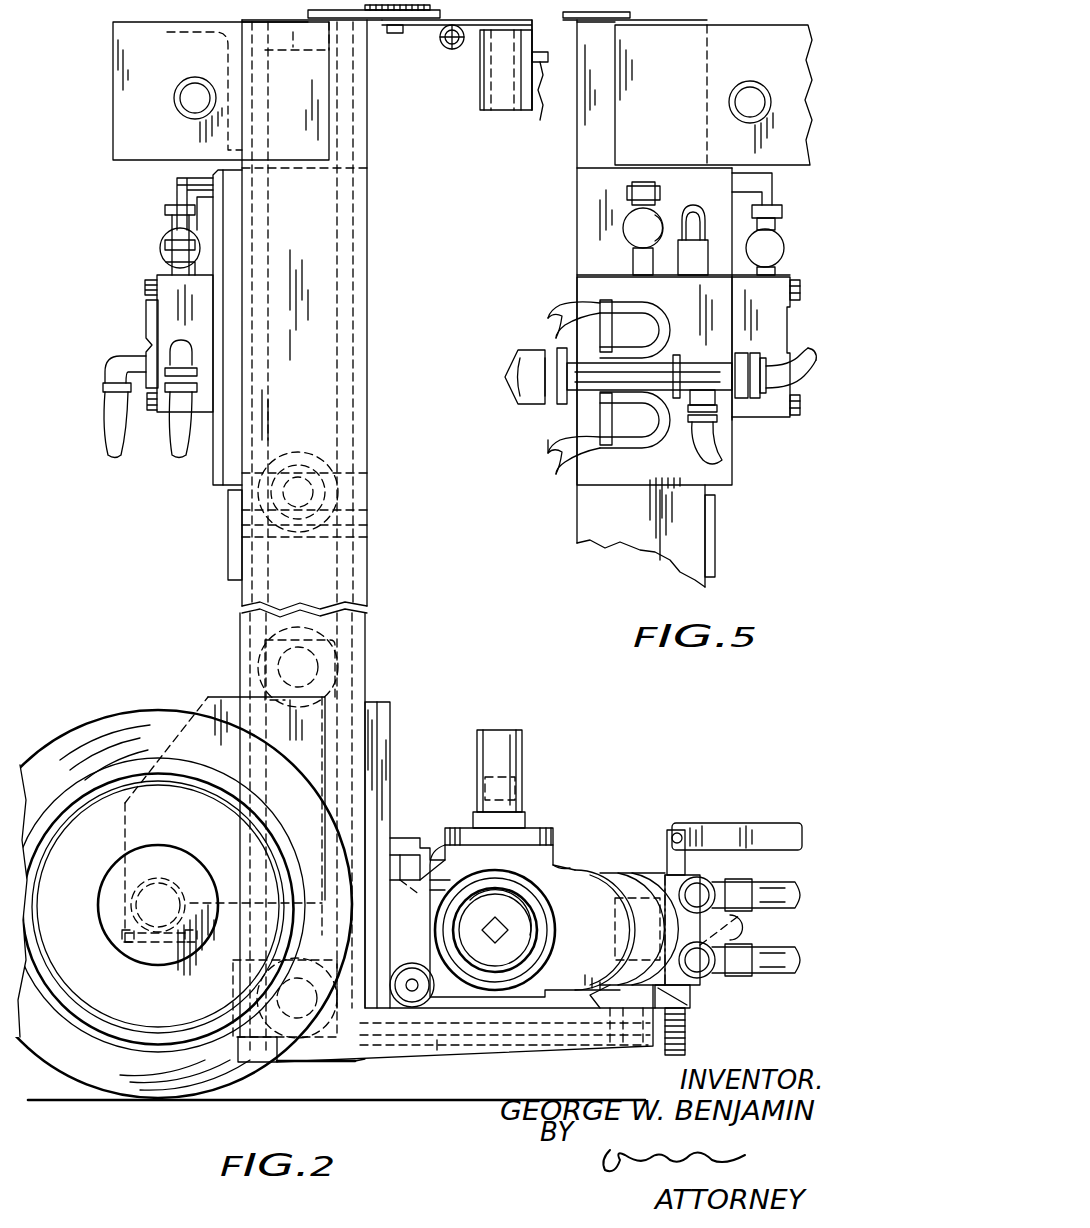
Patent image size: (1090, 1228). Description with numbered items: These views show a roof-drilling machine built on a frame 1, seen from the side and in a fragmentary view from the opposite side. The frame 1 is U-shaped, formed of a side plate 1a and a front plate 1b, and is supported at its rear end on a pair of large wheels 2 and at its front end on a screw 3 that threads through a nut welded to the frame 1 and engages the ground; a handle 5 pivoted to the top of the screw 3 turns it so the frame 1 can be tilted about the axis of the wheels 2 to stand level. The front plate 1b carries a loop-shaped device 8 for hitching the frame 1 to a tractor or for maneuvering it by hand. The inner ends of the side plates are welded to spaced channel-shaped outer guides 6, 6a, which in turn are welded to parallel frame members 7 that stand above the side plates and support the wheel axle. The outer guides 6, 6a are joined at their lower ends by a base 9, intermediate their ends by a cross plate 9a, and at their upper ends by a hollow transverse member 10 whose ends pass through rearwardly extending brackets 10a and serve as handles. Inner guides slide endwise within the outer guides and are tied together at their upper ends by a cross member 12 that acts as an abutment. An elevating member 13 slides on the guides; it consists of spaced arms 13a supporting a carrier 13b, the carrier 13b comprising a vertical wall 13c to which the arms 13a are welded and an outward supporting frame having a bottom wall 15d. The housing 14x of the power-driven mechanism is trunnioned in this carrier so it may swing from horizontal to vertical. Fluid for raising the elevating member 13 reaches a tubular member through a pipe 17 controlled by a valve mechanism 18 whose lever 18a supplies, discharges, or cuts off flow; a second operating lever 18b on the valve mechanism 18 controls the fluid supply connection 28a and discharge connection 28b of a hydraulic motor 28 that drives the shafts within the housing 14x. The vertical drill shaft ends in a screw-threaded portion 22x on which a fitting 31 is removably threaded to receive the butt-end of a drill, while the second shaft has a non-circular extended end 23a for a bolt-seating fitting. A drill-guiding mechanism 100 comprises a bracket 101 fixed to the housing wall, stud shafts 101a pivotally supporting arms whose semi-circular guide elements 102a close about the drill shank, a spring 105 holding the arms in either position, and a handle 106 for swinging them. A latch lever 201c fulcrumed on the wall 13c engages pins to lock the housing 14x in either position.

In FIG. 2, the frame 1 is at (394, 1095).
In FIG. 2, the side plate 1a is at (338, 1064).
In FIG. 2, the front plate 1b is at (655, 1046).
In FIG. 2, the wheels 2 is at (50, 765).
In FIG. 2, the screw 3 is at (688, 1030).
In FIG. 2, the handle 5 is at (720, 838).
In FIG. 2, the outer guide 6 is at (362, 395).
In FIG. 5, the outer guide 6a is at (577, 525).
In FIG. 2, the frame members 7 is at (208, 697).
In FIG. 2, the loop-shaped device 8 is at (748, 930).
In FIG. 2, the base 9 is at (312, 1064).
In FIG. 2, the cross plate 9a is at (228, 545).
In FIG. 5, the cross plate 9a is at (716, 545).
In FIG. 2, the hollow transverse member 10 is at (178, 112).
In FIG. 5, the hollow transverse member 10 is at (765, 80).
In FIG. 2, the brackets 10a is at (122, 156).
In FIG. 5, the brackets 10a is at (790, 158).
In FIG. 2, the cross member 12 is at (248, 86).
In FIG. 2, the elevating member 13 is at (407, 687).
In FIG. 2, the arms 13a is at (370, 728).
In FIG. 2, the carrier 13b is at (434, 773).
In FIG. 2, the vertical wall 13c is at (385, 800).
In FIG. 2, the housing 14x is at (562, 865).
In FIG. 2, the bottom wall 15d is at (437, 1066).
In FIG. 5, the pipe 17 is at (553, 455).
In FIG. 5, the valve mechanism 18 is at (630, 483).
In FIG. 5, the lever 18a is at (635, 228).
In FIG. 5, the operating lever 18b is at (775, 248).
In FIG. 2, the screw threaded end portion 22x is at (505, 795).
In FIG. 2, the extended end 23a is at (505, 912).
In FIG. 2, the motor 28 is at (652, 893).
In FIG. 2, the fluid supply connection 28a is at (785, 975).
In FIG. 2, the fluid discharge connection 28b is at (780, 876).
In FIG. 2, the fitting 31 is at (497, 757).
In FIG. 2, the drill guiding mechanism 100 is at (482, 134).
In FIG. 2, the bracket 101 is at (310, 20).
In FIG. 5, the bracket 101 is at (585, 22).
In FIG. 2, the stud shafts 101a is at (395, 33).
In FIG. 2, the guide elements 102a is at (485, 93).
In FIG. 2, the spring 105 is at (450, 49).
In FIG. 2, the handle 106 is at (538, 80).
In FIG. 2, the lever 201c is at (398, 845).